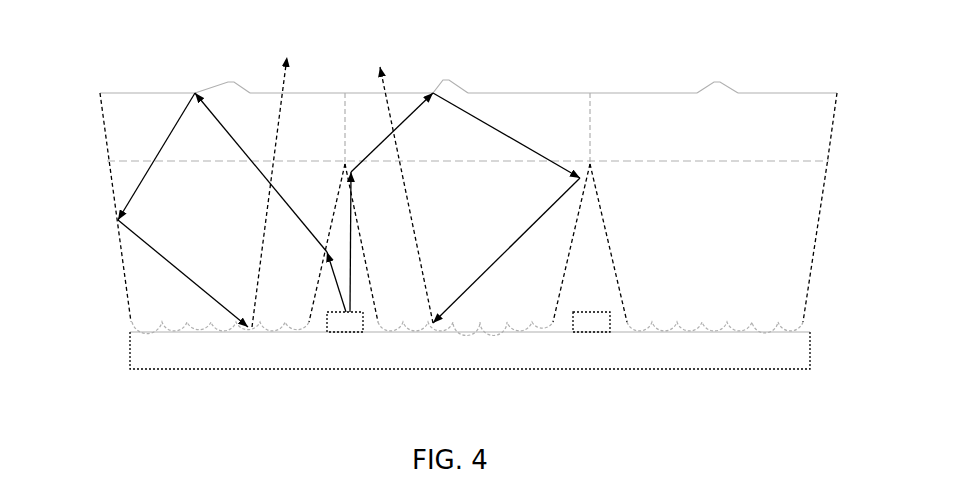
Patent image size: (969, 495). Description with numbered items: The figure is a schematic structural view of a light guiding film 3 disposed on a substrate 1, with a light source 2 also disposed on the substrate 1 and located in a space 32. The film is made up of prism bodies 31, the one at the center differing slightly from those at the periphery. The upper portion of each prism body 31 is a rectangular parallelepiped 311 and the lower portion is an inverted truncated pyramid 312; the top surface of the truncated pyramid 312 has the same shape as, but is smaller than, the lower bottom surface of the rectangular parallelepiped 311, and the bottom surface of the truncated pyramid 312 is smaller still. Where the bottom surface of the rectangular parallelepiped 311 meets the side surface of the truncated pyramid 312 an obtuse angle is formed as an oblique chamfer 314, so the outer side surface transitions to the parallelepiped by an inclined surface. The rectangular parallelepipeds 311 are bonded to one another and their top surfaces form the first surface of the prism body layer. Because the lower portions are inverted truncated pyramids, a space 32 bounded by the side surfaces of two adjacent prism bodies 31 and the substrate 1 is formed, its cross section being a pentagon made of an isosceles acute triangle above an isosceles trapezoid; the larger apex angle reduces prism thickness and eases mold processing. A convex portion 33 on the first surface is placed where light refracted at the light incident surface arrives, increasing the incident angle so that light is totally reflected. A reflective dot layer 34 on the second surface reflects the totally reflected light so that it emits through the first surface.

The substrate 1 is at (797, 352).
The light source 2 is at (337, 323).
The light guiding film 3 is at (92, 230).
The prism body 31 is at (55, 73).
The rectangular parallelepiped 311 is at (117, 117).
The inverted truncated pyramid 312 is at (120, 183).
The oblique chamfer 314 is at (343, 165).
The space 32 is at (360, 295).
The convex portion 33 is at (240, 83).
The reflective dot layer 34 is at (173, 330).